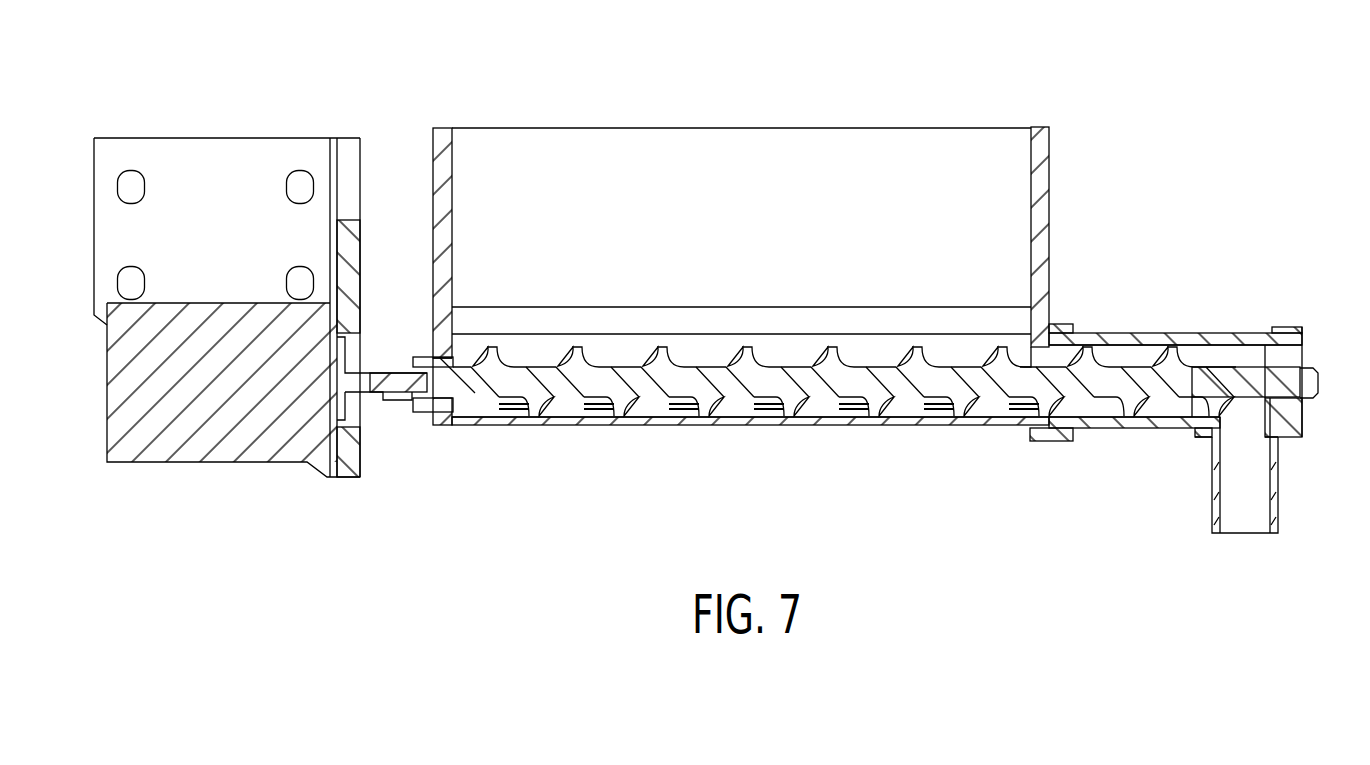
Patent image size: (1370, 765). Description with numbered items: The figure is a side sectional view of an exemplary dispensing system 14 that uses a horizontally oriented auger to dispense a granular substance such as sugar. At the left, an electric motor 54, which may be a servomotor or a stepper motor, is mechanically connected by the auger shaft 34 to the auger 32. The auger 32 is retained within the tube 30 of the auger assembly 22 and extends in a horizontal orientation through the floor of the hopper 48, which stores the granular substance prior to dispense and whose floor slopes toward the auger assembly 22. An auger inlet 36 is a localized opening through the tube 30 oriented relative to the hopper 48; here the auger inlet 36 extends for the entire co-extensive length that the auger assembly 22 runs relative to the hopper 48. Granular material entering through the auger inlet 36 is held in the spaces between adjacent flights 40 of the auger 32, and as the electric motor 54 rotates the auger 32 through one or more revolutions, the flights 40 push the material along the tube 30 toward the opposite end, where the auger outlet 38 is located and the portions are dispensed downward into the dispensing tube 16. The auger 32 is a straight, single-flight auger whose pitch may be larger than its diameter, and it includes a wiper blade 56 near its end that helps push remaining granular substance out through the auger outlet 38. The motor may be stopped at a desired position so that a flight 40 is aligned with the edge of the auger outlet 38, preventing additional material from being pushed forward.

The dispensing system 14 is at (1027, 72).
The dispensing tube 16 is at (1279, 496).
The auger assembly 22 is at (1027, 453).
The tube 30 is at (1115, 340).
The auger 32 is at (765, 380).
The auger shaft 34 is at (400, 382).
The auger inlet 36 is at (874, 334).
The auger outlet 38 is at (1229, 441).
The flight 40 is at (870, 405).
The hopper 48 is at (741, 128).
The electric motor 54 is at (228, 445).
The wiper blade 56 is at (1212, 380).